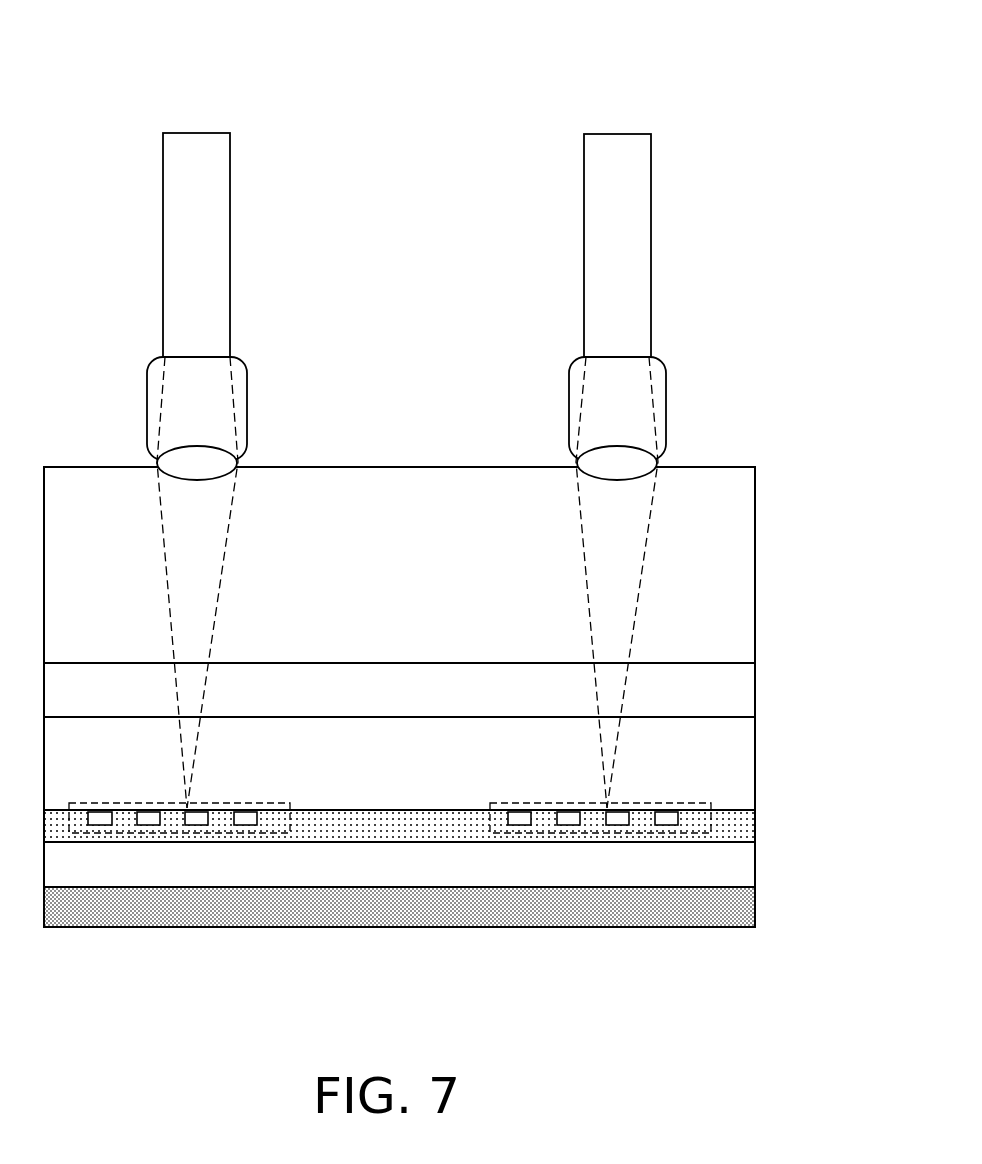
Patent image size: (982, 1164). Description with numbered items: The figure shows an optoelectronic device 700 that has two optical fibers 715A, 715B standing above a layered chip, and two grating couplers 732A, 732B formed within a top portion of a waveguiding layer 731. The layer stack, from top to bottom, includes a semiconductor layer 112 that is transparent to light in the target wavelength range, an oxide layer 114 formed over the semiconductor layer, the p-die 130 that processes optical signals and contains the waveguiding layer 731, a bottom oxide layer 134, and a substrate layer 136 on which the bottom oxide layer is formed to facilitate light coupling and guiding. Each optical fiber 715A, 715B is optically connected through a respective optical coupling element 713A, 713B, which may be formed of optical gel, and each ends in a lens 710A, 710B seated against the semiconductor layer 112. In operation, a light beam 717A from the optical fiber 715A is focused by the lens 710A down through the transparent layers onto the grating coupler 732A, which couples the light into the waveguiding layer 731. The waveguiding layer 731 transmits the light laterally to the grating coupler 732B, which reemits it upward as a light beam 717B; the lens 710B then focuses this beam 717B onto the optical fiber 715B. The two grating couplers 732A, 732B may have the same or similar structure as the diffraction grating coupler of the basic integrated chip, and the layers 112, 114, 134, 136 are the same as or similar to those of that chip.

The optoelectronic device 700 is at (424, 70).
The optical fiber 715A is at (182, 235).
The optical fiber 715B is at (602, 235).
The optical coupling element 713A is at (237, 378).
The optical coupling element 713B is at (657, 378).
The lens 710A is at (197, 446).
The lens 710B is at (617, 446).
The light beam 717A is at (163, 590).
The light beam 717B is at (586, 590).
The semiconductor layer 112 is at (745, 586).
The oxide layer 114 is at (745, 686).
The p-die 130 is at (743, 794).
The bottom oxide layer 134 is at (743, 868).
The substrate layer 136 is at (697, 917).
The waveguiding layer 731 is at (395, 842).
The grating coupler 732A is at (178, 842).
The grating coupler 732B is at (598, 842).